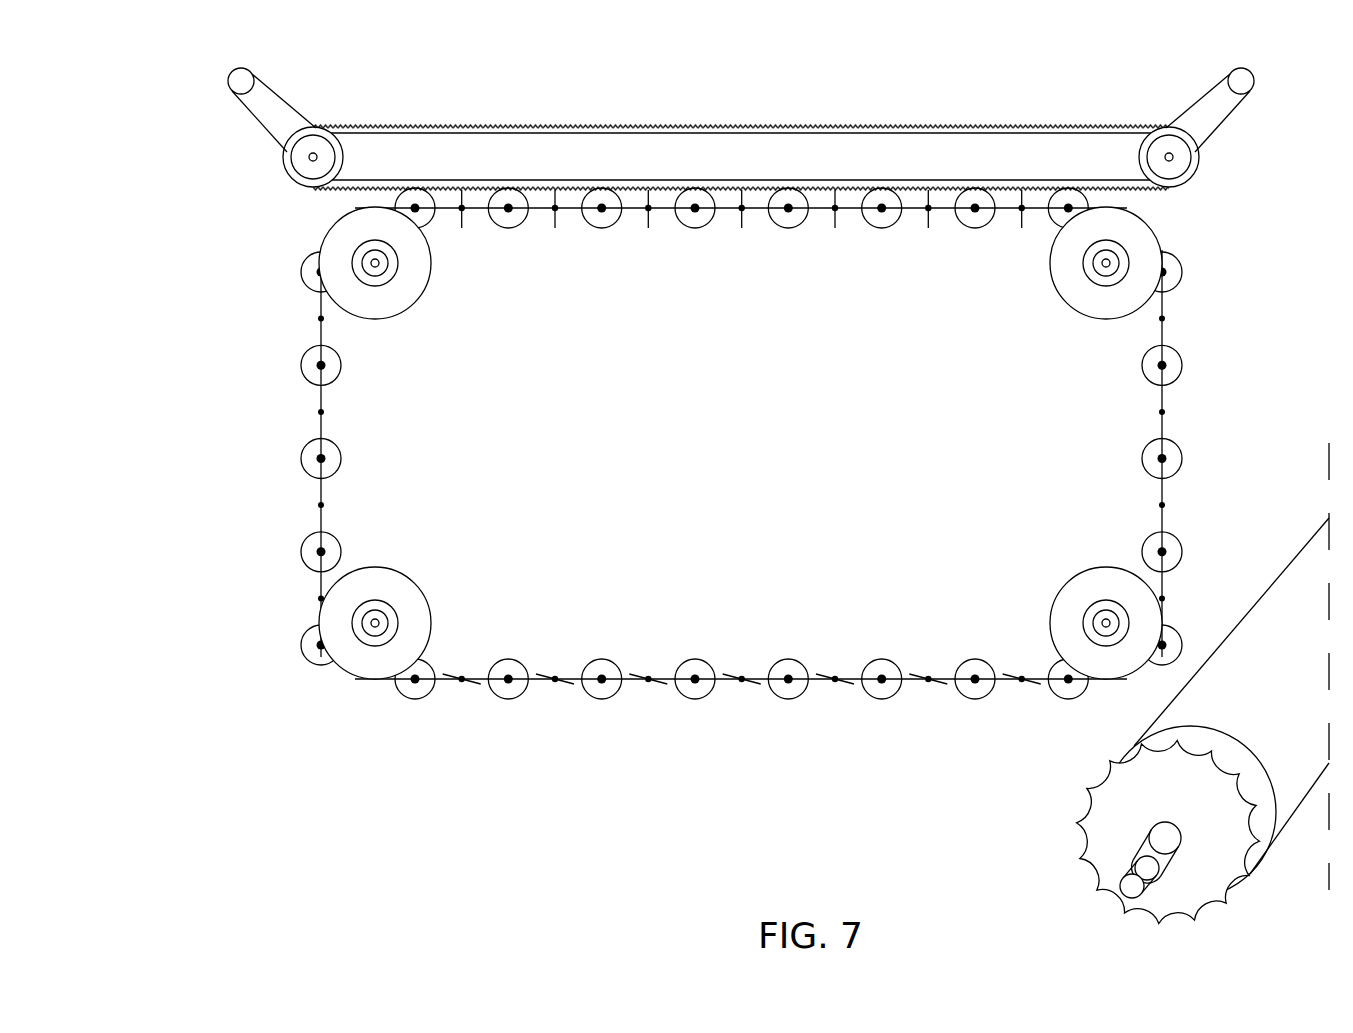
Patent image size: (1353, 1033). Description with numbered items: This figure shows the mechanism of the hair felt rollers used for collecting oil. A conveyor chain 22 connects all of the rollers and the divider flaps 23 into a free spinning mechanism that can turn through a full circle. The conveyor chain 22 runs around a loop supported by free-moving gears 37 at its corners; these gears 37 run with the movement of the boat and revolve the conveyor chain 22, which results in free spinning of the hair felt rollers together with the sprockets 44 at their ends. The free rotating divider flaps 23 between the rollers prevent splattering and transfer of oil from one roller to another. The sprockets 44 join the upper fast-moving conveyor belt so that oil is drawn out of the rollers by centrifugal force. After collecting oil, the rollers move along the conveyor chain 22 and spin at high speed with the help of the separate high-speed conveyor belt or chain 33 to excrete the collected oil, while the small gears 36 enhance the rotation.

The conveyor chain 22 is at (722, 686).
The divider flaps 23 is at (602, 750).
The high-speed conveyor belt/chain 33 is at (1000, 126).
The small gears 36 is at (252, 73).
The free-moving gears 37 is at (249, 438).
The sprockets 44 is at (1054, 775).